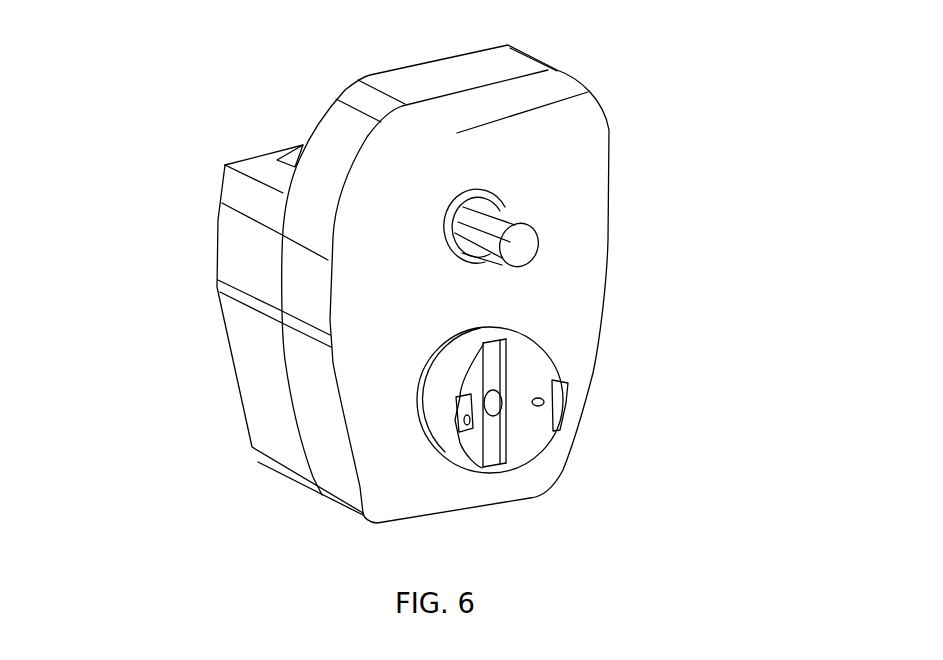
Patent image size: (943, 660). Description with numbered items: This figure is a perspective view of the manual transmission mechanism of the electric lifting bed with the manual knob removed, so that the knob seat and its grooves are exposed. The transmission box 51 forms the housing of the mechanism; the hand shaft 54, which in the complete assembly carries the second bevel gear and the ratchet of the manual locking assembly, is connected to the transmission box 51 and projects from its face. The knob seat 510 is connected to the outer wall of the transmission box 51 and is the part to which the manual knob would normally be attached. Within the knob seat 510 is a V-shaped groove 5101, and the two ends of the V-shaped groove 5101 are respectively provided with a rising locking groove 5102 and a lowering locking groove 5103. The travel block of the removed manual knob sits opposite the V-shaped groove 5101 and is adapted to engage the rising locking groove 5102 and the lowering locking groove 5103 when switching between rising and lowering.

The transmission box 51 is at (460, 130).
The hand shaft 54 is at (485, 232).
The knob seat 510 is at (438, 380).
The V-shaped groove 5101 is at (490, 452).
The rising locking groove 5102 is at (472, 420).
The lowering locking groove 5103 is at (560, 414).